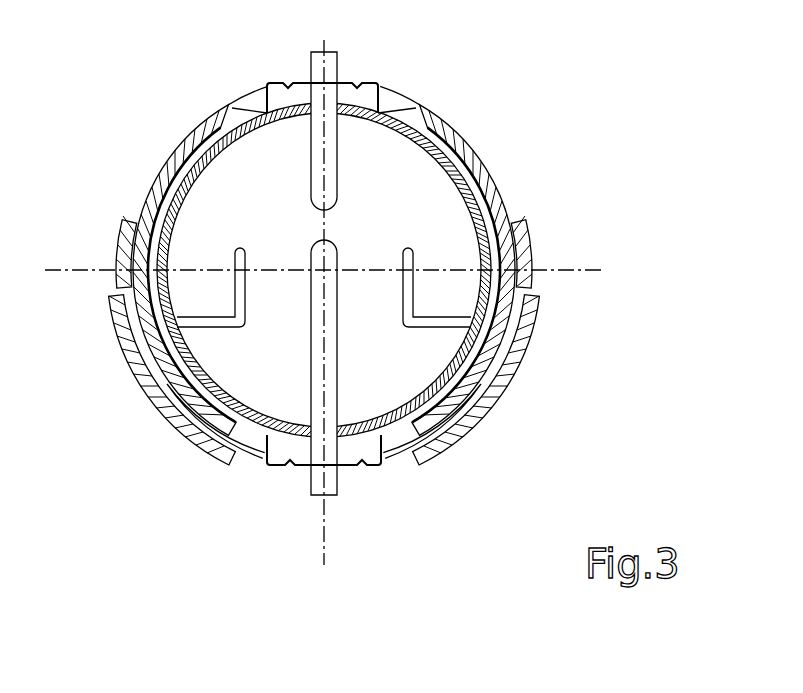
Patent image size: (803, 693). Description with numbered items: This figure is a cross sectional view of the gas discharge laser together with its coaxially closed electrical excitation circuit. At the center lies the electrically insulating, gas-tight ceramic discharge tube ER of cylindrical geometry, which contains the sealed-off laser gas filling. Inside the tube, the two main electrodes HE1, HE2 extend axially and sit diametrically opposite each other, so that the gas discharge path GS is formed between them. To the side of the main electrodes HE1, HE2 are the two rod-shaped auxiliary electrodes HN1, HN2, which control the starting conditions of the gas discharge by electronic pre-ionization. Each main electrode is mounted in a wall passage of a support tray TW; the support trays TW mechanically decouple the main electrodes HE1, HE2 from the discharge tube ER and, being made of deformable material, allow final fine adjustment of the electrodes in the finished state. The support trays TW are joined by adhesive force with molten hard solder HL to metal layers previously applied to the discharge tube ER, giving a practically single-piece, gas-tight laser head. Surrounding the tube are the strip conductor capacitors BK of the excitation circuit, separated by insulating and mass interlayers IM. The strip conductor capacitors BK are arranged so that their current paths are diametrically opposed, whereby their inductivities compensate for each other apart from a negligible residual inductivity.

The discharge tube ER is at (255, 122).
The first main electrode HE1 is at (321, 69).
The second main electrode HE2 is at (320, 485).
The first auxiliary electrode HN1 is at (238, 262).
The second auxiliary electrode HN2 is at (440, 243).
The gas discharge path GS is at (323, 226).
The support tray TW is at (358, 83).
The insulating and mass interlayer IM is at (152, 202).
The strip conductor capacitor BK is at (210, 137).
The hard solder HL is at (175, 417).